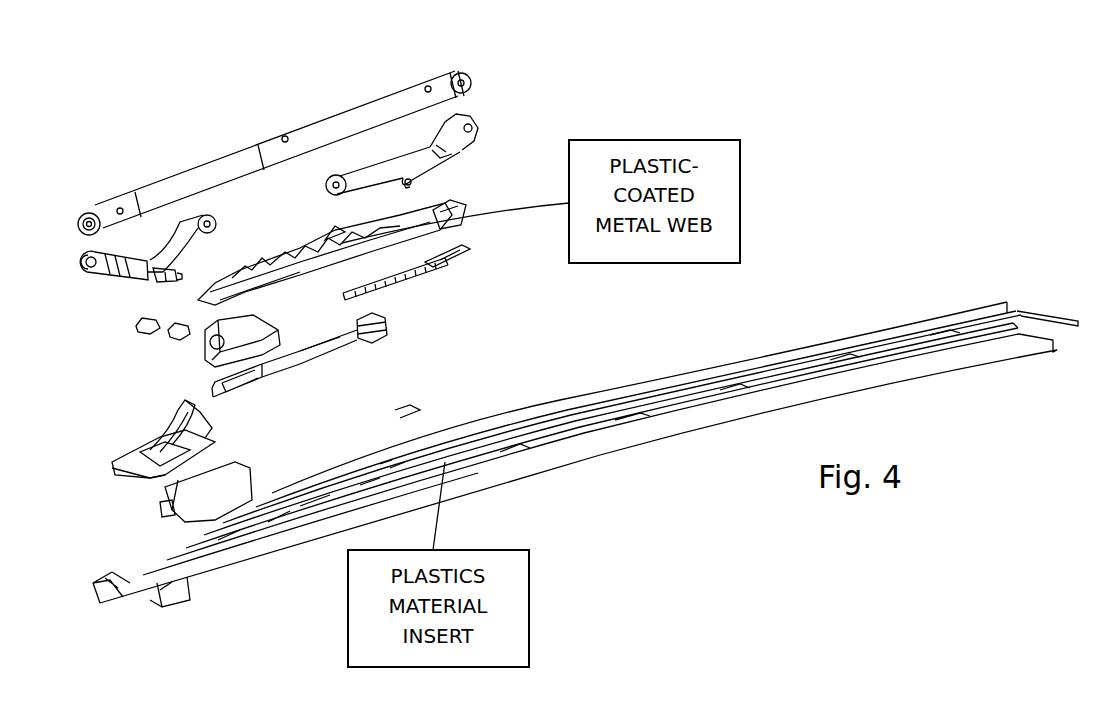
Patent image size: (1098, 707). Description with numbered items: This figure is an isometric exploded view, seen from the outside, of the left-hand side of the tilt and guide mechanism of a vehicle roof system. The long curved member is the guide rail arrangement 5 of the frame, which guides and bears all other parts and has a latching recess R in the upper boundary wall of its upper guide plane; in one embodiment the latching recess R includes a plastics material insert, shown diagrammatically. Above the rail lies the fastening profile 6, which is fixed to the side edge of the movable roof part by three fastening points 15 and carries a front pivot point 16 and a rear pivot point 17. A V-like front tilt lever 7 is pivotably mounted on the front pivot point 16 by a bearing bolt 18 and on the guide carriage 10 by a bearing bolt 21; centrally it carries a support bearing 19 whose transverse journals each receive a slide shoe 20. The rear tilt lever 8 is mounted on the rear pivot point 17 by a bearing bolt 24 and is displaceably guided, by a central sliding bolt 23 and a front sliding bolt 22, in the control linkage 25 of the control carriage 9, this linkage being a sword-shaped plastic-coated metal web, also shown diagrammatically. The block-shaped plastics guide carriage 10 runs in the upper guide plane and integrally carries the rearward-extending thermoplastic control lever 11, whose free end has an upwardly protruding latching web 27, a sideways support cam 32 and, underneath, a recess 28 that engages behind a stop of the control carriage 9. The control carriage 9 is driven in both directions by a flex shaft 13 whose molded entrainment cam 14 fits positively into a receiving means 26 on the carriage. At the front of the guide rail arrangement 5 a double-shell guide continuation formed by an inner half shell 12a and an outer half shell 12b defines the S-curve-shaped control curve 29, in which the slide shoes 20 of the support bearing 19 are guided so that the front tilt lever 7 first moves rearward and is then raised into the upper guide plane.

The guide rail arrangement 5 is at (656, 378).
The fastening profile 6 is at (216, 165).
The front tilt lever 7 is at (112, 288).
The rear tilt lever 8 is at (472, 151).
The control carriage 9 is at (323, 282).
The guide carriage 10 is at (200, 366).
The control lever 11 is at (293, 382).
The inner half shell 12a is at (115, 487).
The outer half shell 12b is at (150, 510).
The flex shaft 13 is at (446, 280).
The entrainment cam 14 is at (478, 251).
The fastening points 15 is at (118, 207).
The front pivot point 16 is at (88, 212).
The rear pivot point 17 is at (460, 72).
The bearing bolt 18 is at (84, 266).
The support bearing 19 is at (180, 270).
The slide shoes 20 is at (172, 333).
The bearing bolt 21 is at (216, 218).
The sliding bolt 22 is at (336, 175).
The sliding bolt 23 is at (418, 183).
The bearing bolt 24 is at (480, 122).
The control linkage 25 is at (338, 228).
The receiving means 26 is at (445, 205).
The latching web 27 is at (372, 316).
The recess 28 is at (324, 366).
The control curve 29 is at (195, 437).
The support cam 32 is at (388, 330).
The latching recess R is at (386, 462).